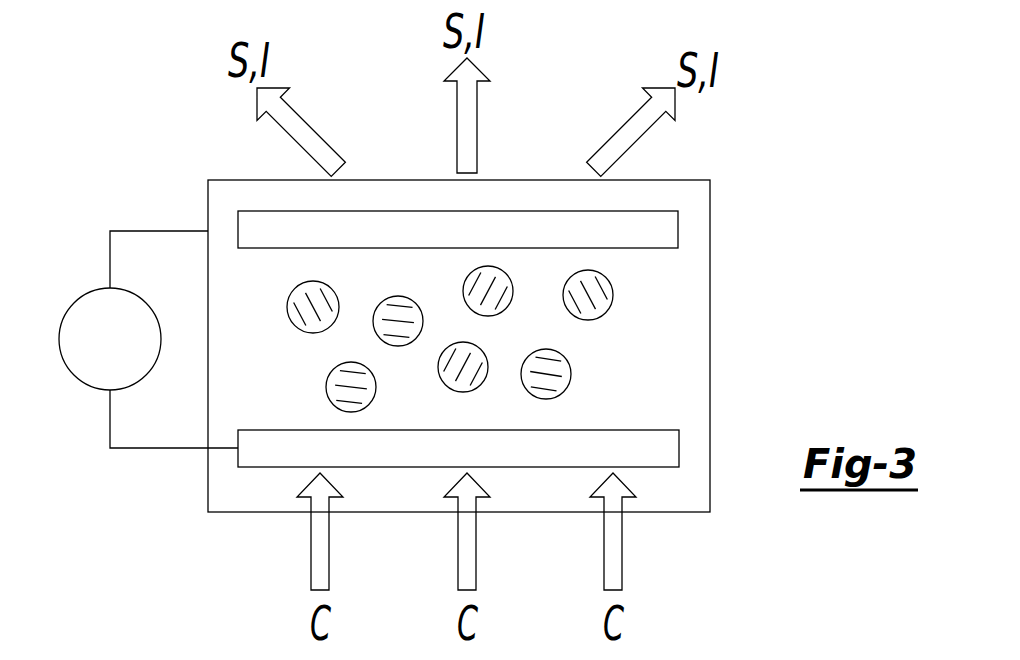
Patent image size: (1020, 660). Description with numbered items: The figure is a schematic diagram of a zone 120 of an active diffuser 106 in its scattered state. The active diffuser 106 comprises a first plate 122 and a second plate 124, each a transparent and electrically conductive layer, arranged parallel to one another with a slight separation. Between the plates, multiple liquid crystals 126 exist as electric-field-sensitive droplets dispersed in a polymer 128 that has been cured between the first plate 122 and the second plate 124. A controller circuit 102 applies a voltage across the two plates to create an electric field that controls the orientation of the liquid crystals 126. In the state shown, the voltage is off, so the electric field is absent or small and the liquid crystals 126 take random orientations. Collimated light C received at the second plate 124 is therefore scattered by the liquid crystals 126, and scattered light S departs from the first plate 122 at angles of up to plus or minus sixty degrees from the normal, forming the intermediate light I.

The controller circuit 102 is at (85, 296).
The active diffuser 106 is at (231, 180).
The zone 120 is at (416, 315).
The first plate 122 is at (677, 212).
The second plate 124 is at (660, 467).
The liquid crystals 126 is at (603, 317).
The polymer 128 is at (692, 292).